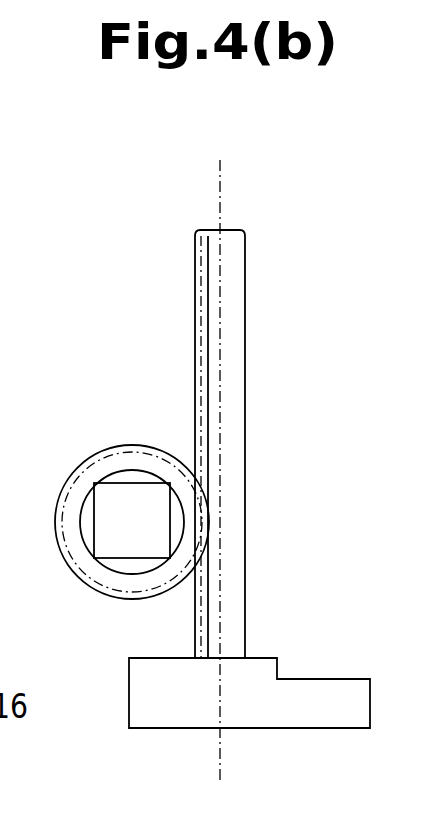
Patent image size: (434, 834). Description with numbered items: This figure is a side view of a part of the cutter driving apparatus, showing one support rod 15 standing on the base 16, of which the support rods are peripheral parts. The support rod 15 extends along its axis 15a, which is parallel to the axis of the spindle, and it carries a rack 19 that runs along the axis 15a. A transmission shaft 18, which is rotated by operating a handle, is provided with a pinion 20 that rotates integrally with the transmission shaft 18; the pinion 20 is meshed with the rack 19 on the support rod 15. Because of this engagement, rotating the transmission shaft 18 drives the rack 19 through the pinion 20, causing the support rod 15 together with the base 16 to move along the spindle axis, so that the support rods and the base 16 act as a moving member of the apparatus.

The support rod 15 is at (245, 365).
The axis of support rod 15a is at (220, 200).
The base 16 is at (326, 690).
The transmission shaft 18 is at (107, 516).
The rack 19 is at (195, 362).
The pinion 20 is at (99, 452).